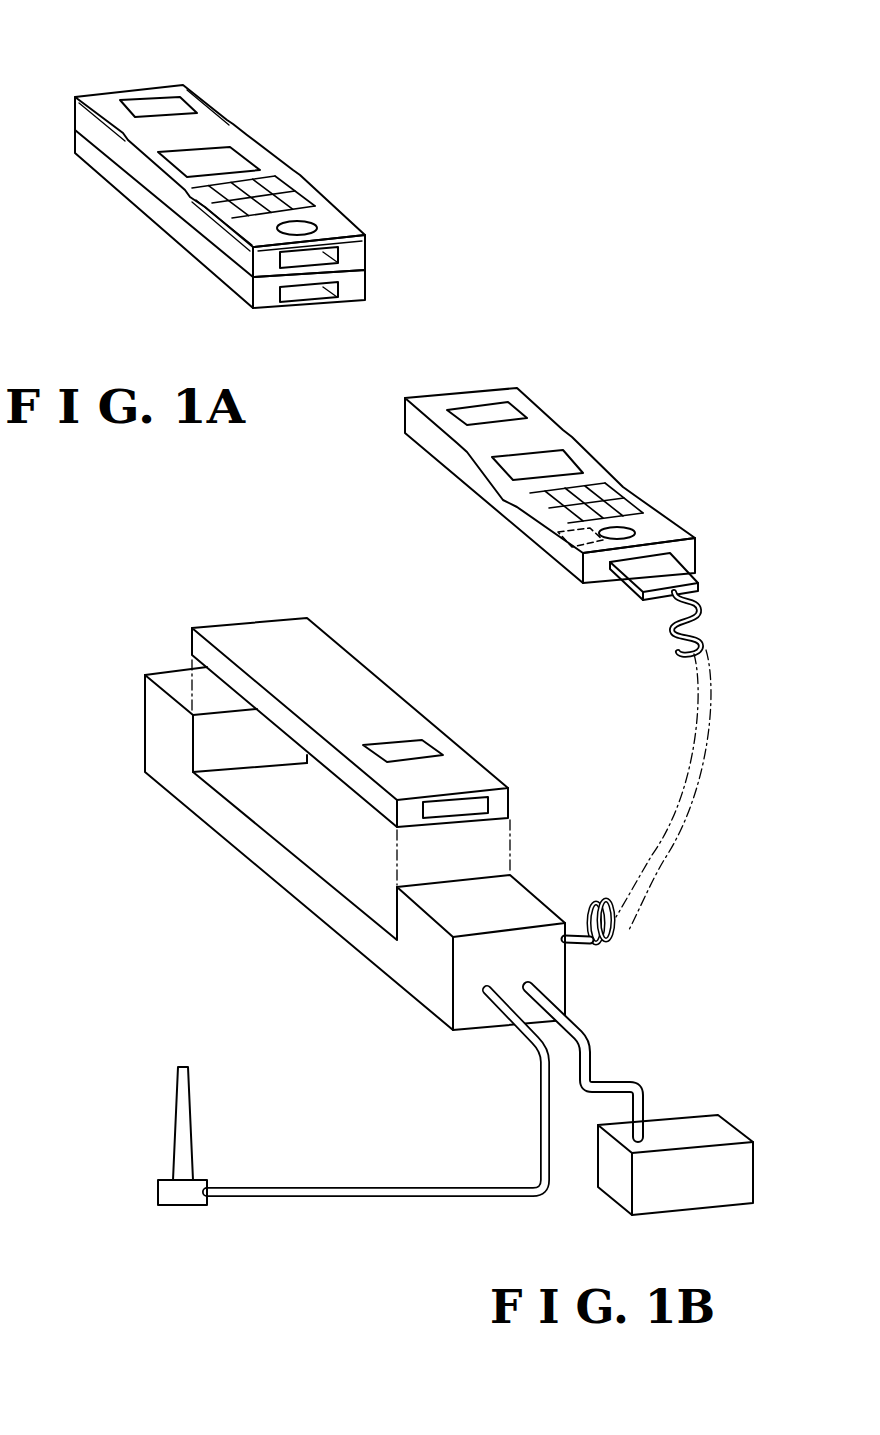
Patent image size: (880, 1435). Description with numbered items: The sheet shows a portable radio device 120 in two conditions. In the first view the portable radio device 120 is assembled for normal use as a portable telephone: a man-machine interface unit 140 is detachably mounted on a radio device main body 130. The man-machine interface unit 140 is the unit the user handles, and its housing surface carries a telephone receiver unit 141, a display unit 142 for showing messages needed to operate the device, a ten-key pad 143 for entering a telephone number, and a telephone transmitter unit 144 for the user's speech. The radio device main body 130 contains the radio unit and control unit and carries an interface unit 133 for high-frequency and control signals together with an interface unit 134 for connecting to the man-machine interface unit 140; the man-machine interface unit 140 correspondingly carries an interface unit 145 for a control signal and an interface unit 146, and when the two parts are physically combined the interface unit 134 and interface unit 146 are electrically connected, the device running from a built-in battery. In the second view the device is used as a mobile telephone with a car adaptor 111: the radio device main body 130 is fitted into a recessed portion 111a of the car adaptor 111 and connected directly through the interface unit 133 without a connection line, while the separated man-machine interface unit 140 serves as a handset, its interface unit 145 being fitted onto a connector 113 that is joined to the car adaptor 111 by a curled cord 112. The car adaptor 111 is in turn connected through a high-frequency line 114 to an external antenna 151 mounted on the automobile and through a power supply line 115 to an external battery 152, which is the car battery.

In FIG. 1A, the portable radio device 120 is at (224, 79).
In FIG. 1A, the man-machine interface unit 140 is at (131, 170).
In FIG. 1B, the man-machine interface unit 140 is at (537, 421).
In FIG. 1A, the telephone receiver unit 141 is at (160, 105).
In FIG. 1B, the telephone receiver unit 141 is at (481, 410).
In FIG. 1A, the display unit 142 is at (231, 151).
In FIG. 1B, the display unit 142 is at (562, 467).
In FIG. 1A, the ten-key pad 143 is at (262, 190).
In FIG. 1B, the ten-key pad 143 is at (612, 493).
In FIG. 1A, the telephone transmitter unit 144 is at (310, 222).
In FIG. 1B, the telephone transmitter unit 144 is at (637, 530).
In FIG. 1A, the interface unit for a control signal 145 is at (328, 251).
In FIG. 1A, the radio device main body 130 is at (171, 232).
In FIG. 1B, the radio device main body 130 is at (364, 683).
In FIG. 1A, the interface unit for high-frequency and control signals 133 is at (313, 296).
In FIG. 1B, the interface unit for high-frequency and control signals 133 is at (460, 803).
In FIG. 1B, the interface unit for connecting the radio device main body to the MMI unit 134 is at (413, 745).
In FIG. 1B, the interface unit for connecting the MMI unit to the radio device main body 146 is at (572, 547).
In FIG. 1B, the connector 113 is at (672, 567).
In FIG. 1B, the curled cord 112 is at (710, 624).
In FIG. 1B, the car adaptor 111 is at (297, 883).
In FIG. 1B, the recessed portion 111a is at (262, 800).
In FIG. 1B, the high-frequency line 114 is at (527, 1030).
In FIG. 1B, the power supply line 115 is at (182, 1113).
In FIG. 1B, the external antenna 151 is at (592, 1063).
In FIG. 1B, the external battery 152 is at (698, 1125).